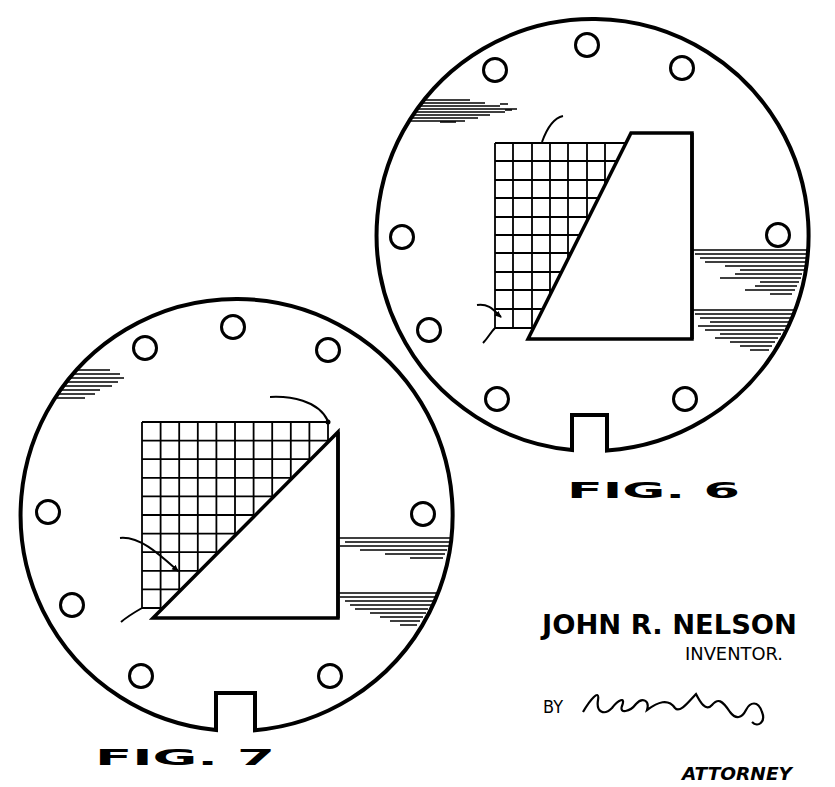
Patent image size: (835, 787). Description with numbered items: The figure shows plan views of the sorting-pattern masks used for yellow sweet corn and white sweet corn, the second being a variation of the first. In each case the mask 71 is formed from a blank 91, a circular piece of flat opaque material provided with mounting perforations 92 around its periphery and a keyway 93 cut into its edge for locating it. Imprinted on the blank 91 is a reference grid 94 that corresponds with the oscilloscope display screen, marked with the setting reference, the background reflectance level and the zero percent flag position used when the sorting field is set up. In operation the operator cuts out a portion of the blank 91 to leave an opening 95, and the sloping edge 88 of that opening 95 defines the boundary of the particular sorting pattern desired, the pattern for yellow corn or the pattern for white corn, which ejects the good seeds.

In FIG. 6, the mask 71 is at (553, 235).
In FIG. 7, the mask 71 is at (237, 499).
In FIG. 6, the sloping edge 88 is at (587, 230).
In FIG. 7, the sloping edge 88 is at (243, 528).
In FIG. 6, the blank 91 is at (396, 160).
In FIG. 7, the blank 91 is at (167, 313).
In FIG. 6, the mounting perforations 92 is at (575, 46).
In FIG. 7, the mounting perforations 92 is at (317, 348).
In FIG. 6, the keyway 93 is at (608, 432).
In FIG. 7, the keyway 93 is at (251, 706).
In FIG. 6, the reference grid 94 is at (490, 143).
In FIG. 7, the reference grid 94 is at (147, 414).
In FIG. 6, the opening 95 is at (688, 169).
In FIG. 7, the opening 95 is at (339, 491).